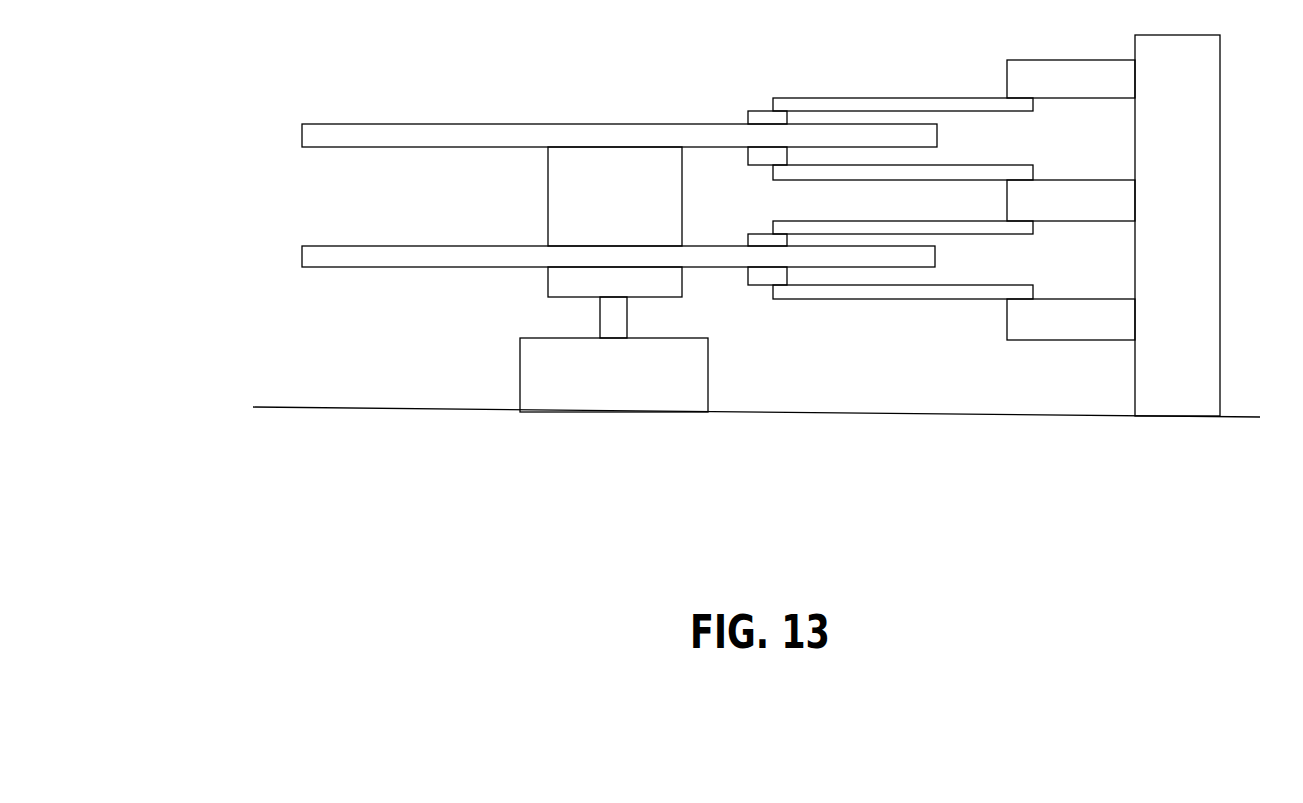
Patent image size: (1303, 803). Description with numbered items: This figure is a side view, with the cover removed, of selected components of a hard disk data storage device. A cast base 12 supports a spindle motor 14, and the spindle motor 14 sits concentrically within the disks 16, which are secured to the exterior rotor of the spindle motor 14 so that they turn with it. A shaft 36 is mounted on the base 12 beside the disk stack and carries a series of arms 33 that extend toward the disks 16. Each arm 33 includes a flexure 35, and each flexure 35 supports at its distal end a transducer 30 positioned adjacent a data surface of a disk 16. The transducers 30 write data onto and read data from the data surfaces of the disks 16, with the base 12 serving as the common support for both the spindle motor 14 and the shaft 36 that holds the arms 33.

The cast base 12 is at (756, 452).
The spindle motor 14 is at (628, 209).
The disks 16 is at (570, 194).
The transducers 30 is at (737, 189).
The arms 33 is at (1071, 229).
The flexures 35 is at (900, 199).
The shaft 36 is at (1198, 147).